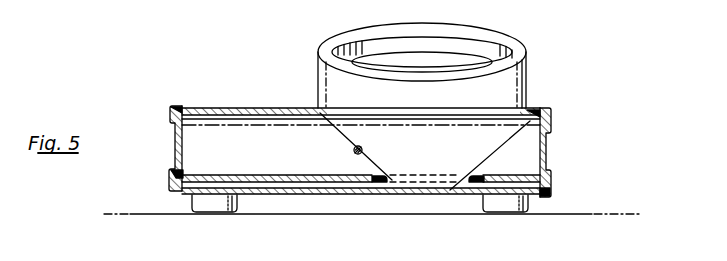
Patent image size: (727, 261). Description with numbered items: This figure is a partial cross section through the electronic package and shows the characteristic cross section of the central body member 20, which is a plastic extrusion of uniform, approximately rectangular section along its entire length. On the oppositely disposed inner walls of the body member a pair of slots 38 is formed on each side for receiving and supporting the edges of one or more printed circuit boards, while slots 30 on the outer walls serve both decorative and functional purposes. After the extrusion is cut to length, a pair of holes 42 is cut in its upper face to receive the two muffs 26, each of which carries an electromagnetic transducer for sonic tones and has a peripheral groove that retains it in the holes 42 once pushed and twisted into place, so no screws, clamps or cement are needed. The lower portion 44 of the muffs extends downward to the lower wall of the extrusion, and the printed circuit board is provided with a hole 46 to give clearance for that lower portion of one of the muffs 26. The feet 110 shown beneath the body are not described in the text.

The central body member 20 is at (226, 107).
The muffs 26 is at (527, 48).
The slots 30 is at (177, 147).
The slots 38 is at (178, 107).
The holes 42 is at (328, 107).
The lower portion of the muffs 44 is at (360, 158).
The hole 46 is at (382, 183).
The foot 110 is at (212, 203).